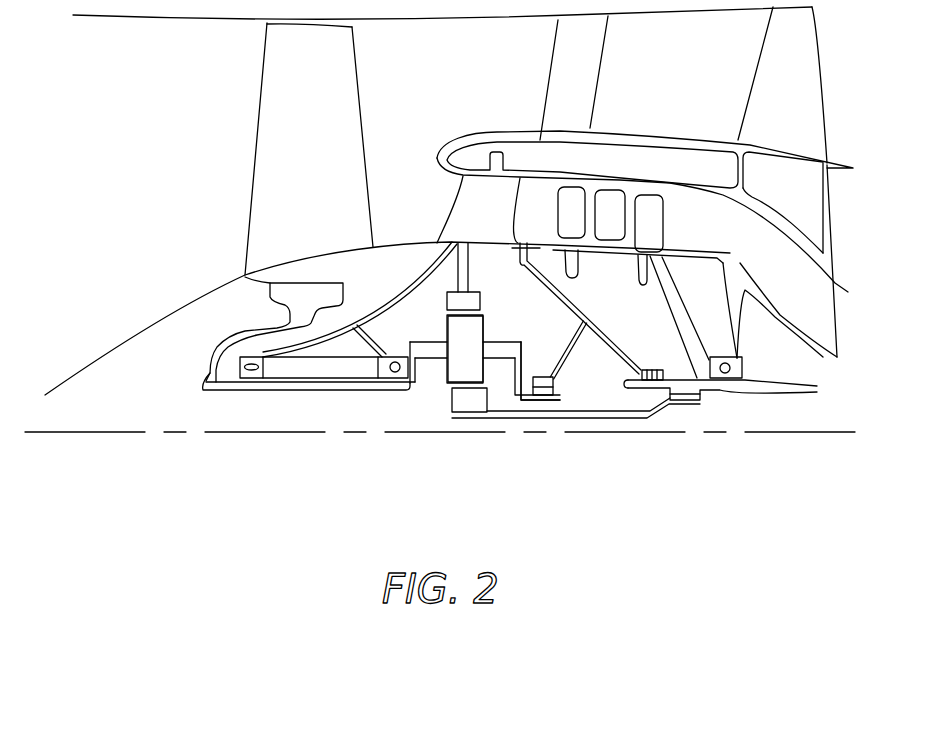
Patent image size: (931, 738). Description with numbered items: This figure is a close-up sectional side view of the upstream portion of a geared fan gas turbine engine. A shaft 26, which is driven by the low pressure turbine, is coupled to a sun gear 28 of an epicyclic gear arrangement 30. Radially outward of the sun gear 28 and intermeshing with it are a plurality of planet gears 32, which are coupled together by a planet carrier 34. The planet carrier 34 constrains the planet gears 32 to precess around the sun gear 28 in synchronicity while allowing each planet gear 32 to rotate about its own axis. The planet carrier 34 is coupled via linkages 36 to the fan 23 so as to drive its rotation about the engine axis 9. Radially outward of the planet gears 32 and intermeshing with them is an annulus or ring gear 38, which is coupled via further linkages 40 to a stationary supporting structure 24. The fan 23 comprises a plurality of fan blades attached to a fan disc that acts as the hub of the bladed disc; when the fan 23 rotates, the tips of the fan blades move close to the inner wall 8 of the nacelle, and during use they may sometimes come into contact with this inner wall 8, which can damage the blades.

The inner wall 8 is at (130, 16).
The engine axis 9 is at (135, 433).
The fan 23 is at (283, 152).
The stationary supporting structure 24 is at (470, 202).
The shaft 26 is at (716, 392).
The sun gear 28 is at (468, 403).
The epicyclic gear arrangement 30 is at (435, 384).
The planet gears 32 is at (453, 373).
The planet carrier 34 is at (518, 371).
The linkages 36 is at (422, 378).
The ring gear 38 is at (473, 300).
The linkages 40 is at (469, 272).